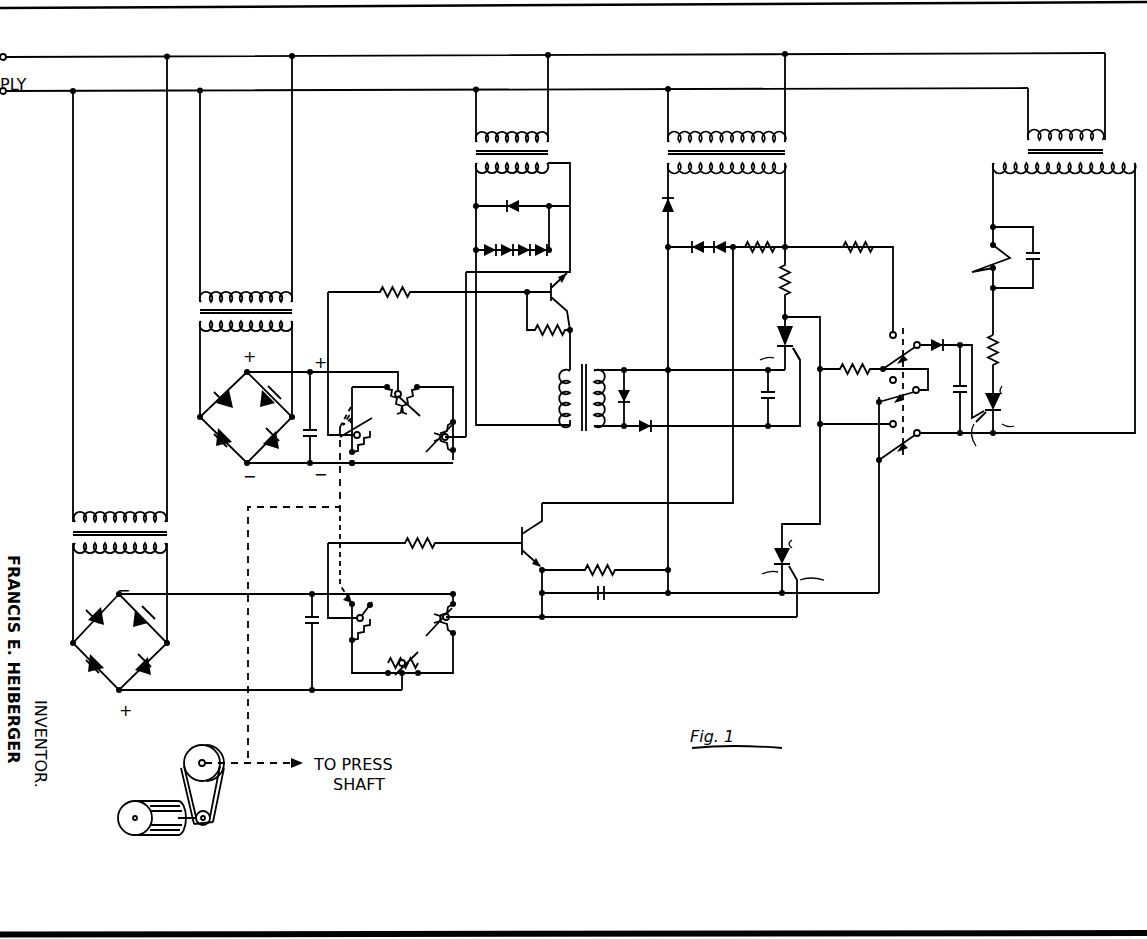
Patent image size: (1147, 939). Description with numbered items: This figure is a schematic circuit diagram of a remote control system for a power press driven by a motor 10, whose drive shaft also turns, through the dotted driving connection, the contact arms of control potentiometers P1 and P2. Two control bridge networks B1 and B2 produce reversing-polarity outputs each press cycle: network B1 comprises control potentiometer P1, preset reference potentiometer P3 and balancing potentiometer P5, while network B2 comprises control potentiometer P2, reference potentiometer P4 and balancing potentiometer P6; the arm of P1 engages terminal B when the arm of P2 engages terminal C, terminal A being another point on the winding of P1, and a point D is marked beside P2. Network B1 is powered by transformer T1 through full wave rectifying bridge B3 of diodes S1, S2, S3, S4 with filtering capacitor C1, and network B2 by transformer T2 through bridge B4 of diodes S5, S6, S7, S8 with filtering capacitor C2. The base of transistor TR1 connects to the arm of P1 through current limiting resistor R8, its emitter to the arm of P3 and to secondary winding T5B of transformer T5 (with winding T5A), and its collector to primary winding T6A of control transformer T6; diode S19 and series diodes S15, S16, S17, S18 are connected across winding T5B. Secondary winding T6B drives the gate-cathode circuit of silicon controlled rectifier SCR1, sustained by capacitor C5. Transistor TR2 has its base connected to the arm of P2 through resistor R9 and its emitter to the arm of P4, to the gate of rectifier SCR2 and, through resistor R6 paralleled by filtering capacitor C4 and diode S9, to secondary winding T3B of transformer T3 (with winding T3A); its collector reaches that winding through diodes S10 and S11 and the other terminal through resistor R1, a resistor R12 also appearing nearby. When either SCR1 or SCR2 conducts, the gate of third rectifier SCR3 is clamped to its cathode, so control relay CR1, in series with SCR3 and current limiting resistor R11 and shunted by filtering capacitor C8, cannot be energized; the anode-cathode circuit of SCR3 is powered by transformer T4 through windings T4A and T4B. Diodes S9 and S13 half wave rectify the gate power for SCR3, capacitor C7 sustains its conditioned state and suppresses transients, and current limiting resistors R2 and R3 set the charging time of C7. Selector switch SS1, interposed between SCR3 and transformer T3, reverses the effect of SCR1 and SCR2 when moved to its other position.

The motor 10 is at (120, 828).
The transformer T1 is at (293, 316).
The transformer T2 is at (170, 532).
The transformer T3 is at (742, 149).
The transformer primary winding T3A is at (717, 140).
The secondary winding T3B is at (722, 174).
The transformer T4 is at (1060, 150).
The transformer primary winding T4A is at (1060, 136).
The secondary winding T4B is at (1052, 174).
The power supplying transformer T5 is at (535, 151).
The transformer primary winding T5A is at (498, 140).
The secondary winding T5B is at (512, 174).
The control transformer T6 is at (573, 403).
The primary winding T6A is at (562, 412).
The secondary winding T6B is at (606, 384).
The bridge network B1 is at (403, 443).
The bridge network B2 is at (427, 628).
The full wave rectifying bridge network B3 is at (262, 426).
The full wave rectifier bridge network B4 is at (133, 653).
The diode S1 is at (218, 386).
The diode S2 is at (270, 384).
The diode S3 is at (222, 450).
The diode S4 is at (268, 452).
The diode S5 is at (88, 612).
The diode S6 is at (144, 608).
The diode S7 is at (92, 678).
The diode S8 is at (143, 680).
The diode S9 is at (660, 204).
The diode S10 is at (700, 258).
The diode S11 is at (722, 258).
The diode S13 is at (922, 339).
The diode S15 is at (522, 262).
The diode S16 is at (492, 247).
The diode S17 is at (510, 246).
The diode S18 is at (538, 257).
The diode S19 is at (513, 198).
The selector switch SS1 is at (897, 462).
The filtering capacitor C1 is at (302, 446).
The filtering capacitor C2 is at (304, 624).
The filtering capacitor C4 is at (616, 584).
The capacitor C5 is at (777, 400).
The capacitor C7 is at (952, 396).
The filtering capacitor C8 is at (1043, 256).
The resistor R1 is at (766, 239).
The current limiting resistor R2 is at (790, 283).
The current limiting resistor R3 is at (856, 356).
The resistor R6 is at (594, 560).
The current limiting resistor R8 is at (396, 284).
The current limiting resistor R9 is at (426, 538).
The resistor R11 is at (1000, 346).
The resistor R12 is at (856, 240).
The control relay CR1 is at (978, 258).
The transistor TR1 is at (560, 296).
The transistor TR2 is at (536, 528).
The static-latching switch SCR1 is at (778, 342).
The static-latching switch SCR2 is at (791, 556).
The third static-latching switch SCR3 is at (1002, 404).
The control potentiometer P1 is at (374, 458).
The control potentiometer P2 is at (380, 625).
The reference potentiometer P3 is at (423, 439).
The reference potentiometer P4 is at (429, 616).
The balancing potentiometer P5 is at (395, 414).
The balancing potentiometer P6 is at (382, 664).
The terminal A is at (356, 466).
The terminal B is at (342, 412).
The terminal C is at (350, 640).
The wiper arm D is at (342, 596).